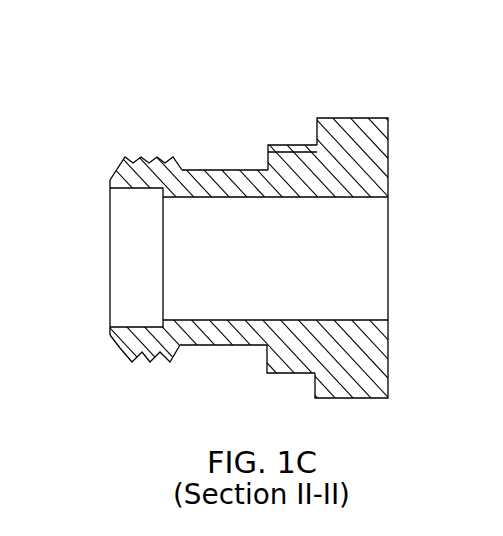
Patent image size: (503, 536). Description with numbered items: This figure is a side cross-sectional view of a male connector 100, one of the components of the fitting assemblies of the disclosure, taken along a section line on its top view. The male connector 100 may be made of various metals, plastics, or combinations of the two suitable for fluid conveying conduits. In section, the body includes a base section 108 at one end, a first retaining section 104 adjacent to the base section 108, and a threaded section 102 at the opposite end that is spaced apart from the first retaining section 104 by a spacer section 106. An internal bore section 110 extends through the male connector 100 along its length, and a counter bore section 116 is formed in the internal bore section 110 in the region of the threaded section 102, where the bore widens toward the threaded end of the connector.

The male connector 100 is at (151, 77).
The threaded section 102 is at (140, 155).
The first retaining section 104 is at (295, 145).
The spacer section 106 is at (230, 170).
The base section 108 is at (353, 117).
The internal bore section 110 is at (372, 257).
The counter bore section 116 is at (132, 262).